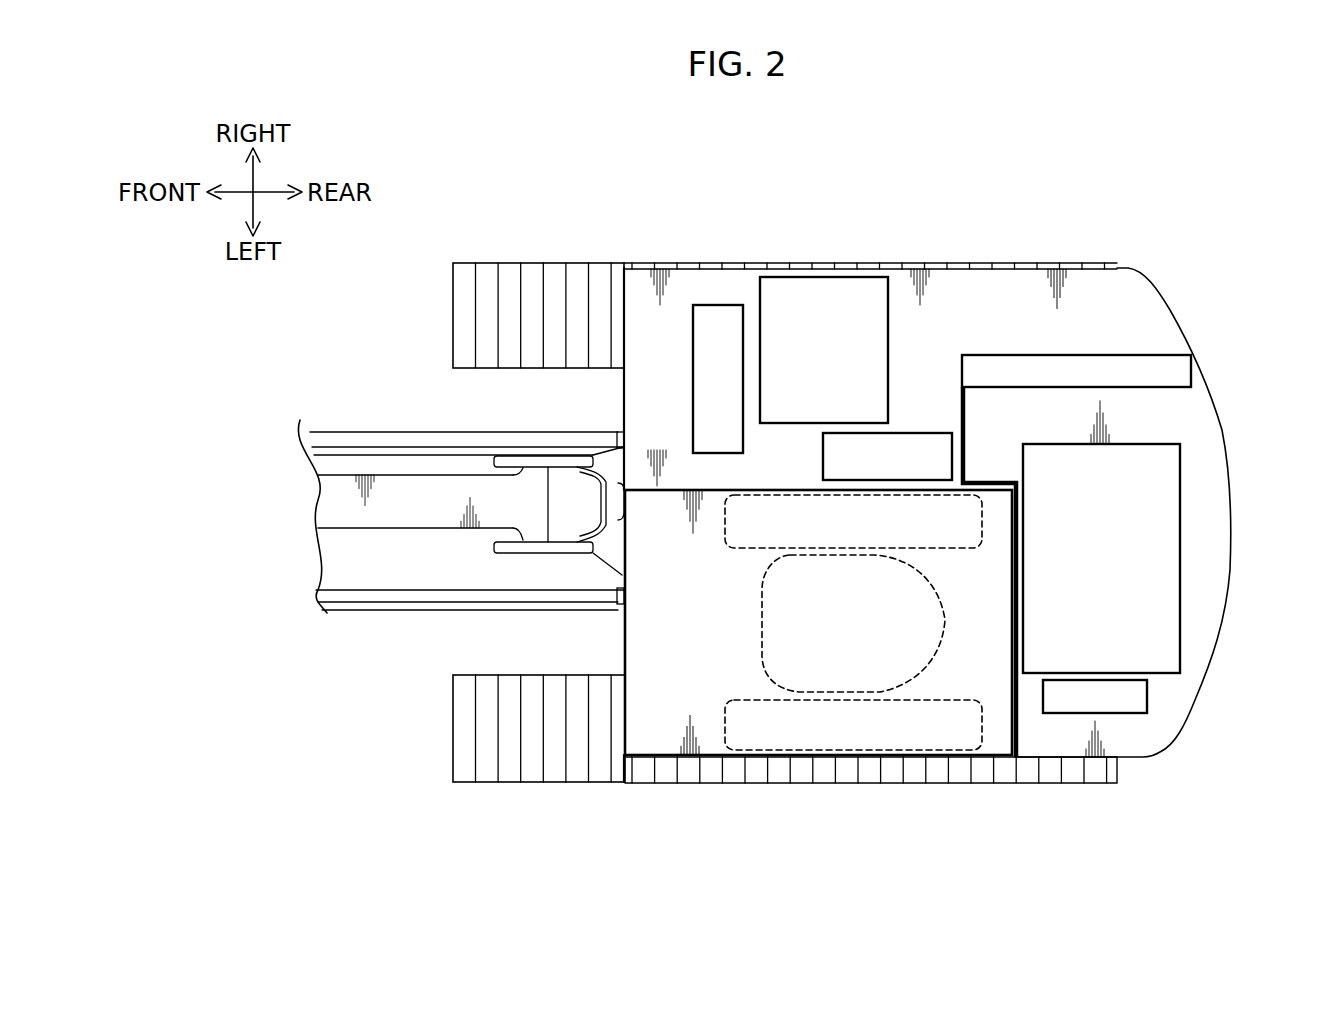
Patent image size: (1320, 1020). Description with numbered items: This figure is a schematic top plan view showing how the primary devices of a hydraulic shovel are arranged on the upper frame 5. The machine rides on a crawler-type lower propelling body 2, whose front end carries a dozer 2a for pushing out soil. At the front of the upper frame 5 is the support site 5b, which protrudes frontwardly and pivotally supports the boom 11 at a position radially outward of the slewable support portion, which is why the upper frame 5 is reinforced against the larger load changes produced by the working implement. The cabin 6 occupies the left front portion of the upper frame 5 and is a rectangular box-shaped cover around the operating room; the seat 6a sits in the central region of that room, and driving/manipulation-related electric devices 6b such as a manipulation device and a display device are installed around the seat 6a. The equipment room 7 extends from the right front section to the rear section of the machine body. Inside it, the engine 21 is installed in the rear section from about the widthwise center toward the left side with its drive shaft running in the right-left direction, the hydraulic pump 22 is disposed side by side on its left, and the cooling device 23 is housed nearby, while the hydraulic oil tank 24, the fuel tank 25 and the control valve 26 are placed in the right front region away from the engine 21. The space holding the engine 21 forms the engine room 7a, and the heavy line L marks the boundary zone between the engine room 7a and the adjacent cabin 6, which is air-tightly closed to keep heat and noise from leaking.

The lower propelling body 2 is at (553, 753).
The dozer 2a is at (403, 610).
The upper frame 5 is at (1133, 268).
The support site 5b is at (568, 465).
The cabin 6 is at (818, 650).
The seat 6a is at (925, 603).
The driving/manipulation-related electric devices 6b is at (763, 717).
The equipment room 7 is at (982, 293).
The engine room 7a is at (1207, 567).
The boom 11 is at (352, 530).
The engine 21 is at (1165, 478).
The hydraulic pump 22 is at (1130, 698).
The cooling device 23 is at (1150, 372).
The hydraulic oil tank 24 is at (922, 458).
The fuel tank 25 is at (818, 297).
The control valve 26 is at (717, 317).
The heavy line L is at (1018, 733).